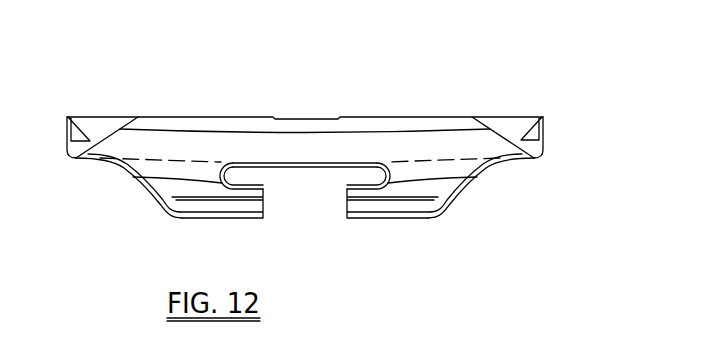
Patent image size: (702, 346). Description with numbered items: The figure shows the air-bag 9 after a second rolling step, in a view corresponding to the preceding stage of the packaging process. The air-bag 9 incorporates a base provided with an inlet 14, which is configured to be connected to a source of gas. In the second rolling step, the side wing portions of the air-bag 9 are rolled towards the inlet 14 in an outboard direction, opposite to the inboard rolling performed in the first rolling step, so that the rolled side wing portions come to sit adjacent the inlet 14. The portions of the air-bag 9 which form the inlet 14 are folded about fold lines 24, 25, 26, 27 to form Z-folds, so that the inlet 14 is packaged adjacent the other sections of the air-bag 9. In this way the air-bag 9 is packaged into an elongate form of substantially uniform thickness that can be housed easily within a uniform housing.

The air-bag 9 is at (409, 99).
The inlet 14 is at (350, 203).
The fold line 24 is at (133, 177).
The fold line 25 is at (510, 159).
The fold line 26 is at (172, 197).
The fold line 27 is at (453, 191).